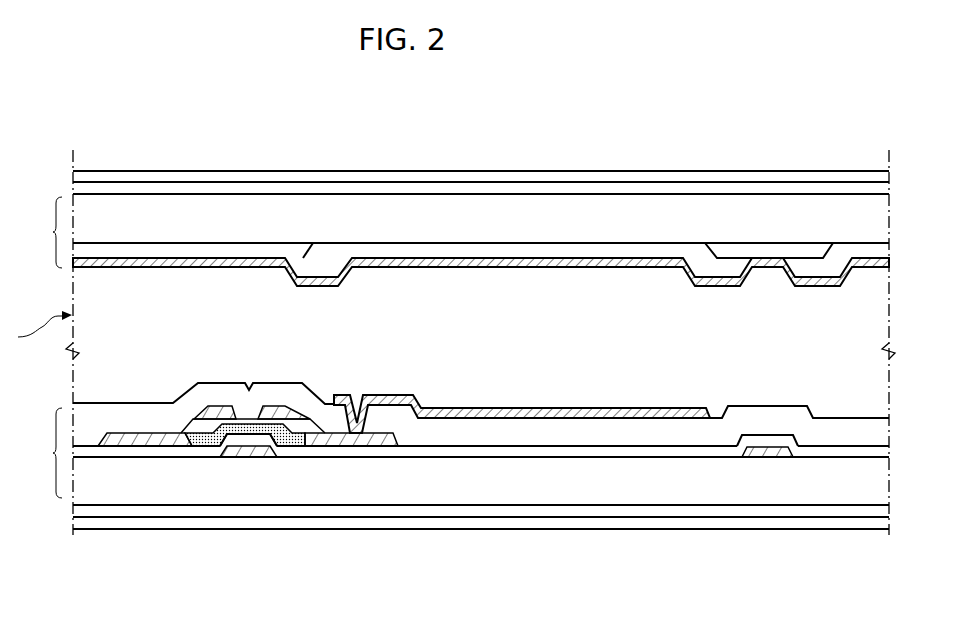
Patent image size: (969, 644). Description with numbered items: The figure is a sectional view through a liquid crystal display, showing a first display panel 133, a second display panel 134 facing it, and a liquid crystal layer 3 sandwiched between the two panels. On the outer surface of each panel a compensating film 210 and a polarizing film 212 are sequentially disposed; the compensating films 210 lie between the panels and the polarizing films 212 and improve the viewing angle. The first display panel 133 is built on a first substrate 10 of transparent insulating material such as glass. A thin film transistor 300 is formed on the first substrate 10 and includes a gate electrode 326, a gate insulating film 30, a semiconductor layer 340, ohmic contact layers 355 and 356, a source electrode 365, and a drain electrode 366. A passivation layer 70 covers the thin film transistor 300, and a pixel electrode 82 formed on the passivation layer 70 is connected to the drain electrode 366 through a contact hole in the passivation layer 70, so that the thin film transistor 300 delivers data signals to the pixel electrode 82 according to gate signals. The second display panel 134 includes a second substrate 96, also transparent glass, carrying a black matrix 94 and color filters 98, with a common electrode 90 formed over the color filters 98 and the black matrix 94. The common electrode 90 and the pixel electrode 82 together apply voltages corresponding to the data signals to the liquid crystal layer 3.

The liquid crystal layer 3 is at (39, 329).
The first substrate 10 is at (577, 497).
The gate insulating film 30 is at (507, 452).
The passivation layer 70 is at (122, 444).
The pixel electrode 82 is at (464, 416).
The common electrode 90 is at (140, 264).
The black matrix 94 is at (199, 250).
The second substrate 96 is at (256, 205).
The color filters 98 is at (481, 250).
The first display panel 133 is at (39, 453).
The second display panel 134 is at (39, 232).
The compensating films 210 is at (571, 188).
The polarizing films 212 is at (617, 177).
The thin film transistor 300 is at (269, 510).
The gate electrode 326 is at (238, 455).
The semiconductor layer 340 is at (289, 449).
The ohmic contact layer 355 is at (205, 446).
The ohmic contact layer 356 is at (261, 499).
The source electrode 365 is at (172, 443).
The drain electrode 366 is at (367, 446).